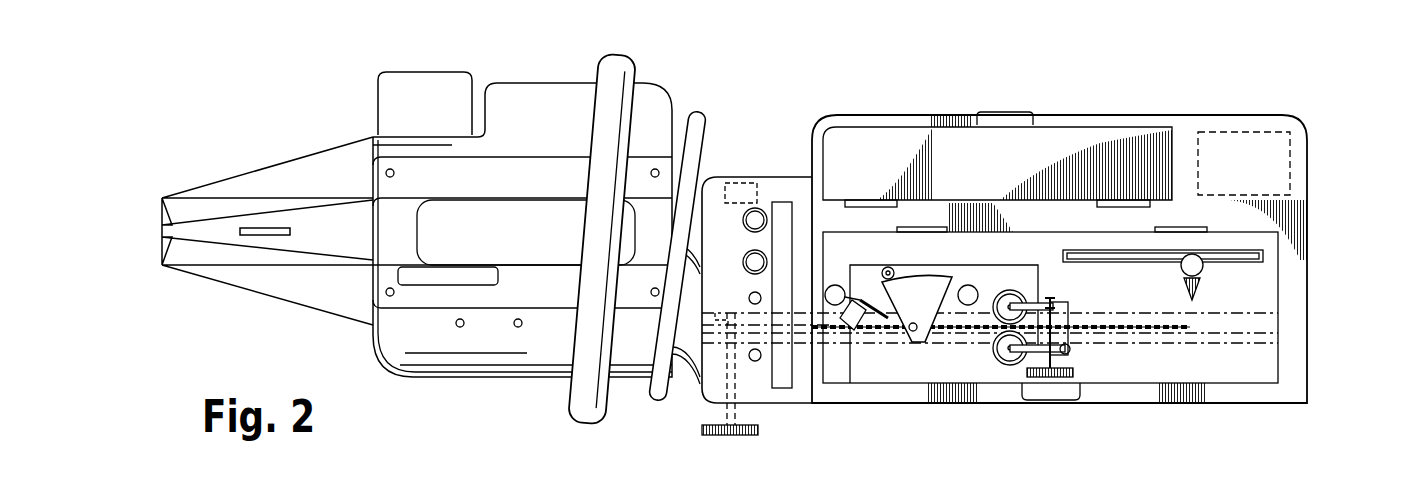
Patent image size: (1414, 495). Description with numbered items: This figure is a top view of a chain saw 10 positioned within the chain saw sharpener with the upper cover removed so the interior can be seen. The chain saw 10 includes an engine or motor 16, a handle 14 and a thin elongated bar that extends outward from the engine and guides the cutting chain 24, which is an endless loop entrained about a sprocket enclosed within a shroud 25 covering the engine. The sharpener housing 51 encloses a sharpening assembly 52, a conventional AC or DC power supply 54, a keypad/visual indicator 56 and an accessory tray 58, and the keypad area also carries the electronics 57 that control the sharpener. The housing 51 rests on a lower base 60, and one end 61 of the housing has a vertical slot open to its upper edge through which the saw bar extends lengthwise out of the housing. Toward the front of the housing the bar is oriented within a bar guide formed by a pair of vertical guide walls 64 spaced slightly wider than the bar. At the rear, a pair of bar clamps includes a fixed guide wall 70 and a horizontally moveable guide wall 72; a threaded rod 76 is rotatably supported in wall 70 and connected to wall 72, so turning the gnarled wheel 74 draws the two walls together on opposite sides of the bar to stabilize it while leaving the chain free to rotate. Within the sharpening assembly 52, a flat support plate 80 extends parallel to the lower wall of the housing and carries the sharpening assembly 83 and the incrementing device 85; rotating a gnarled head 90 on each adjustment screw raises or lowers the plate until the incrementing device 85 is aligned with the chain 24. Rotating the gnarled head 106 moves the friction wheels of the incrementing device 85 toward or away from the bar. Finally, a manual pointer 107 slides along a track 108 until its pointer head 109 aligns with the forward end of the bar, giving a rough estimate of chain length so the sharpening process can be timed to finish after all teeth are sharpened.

The chain saw 10 is at (233, 108).
The handle 14 is at (627, 63).
The engine or motor 16 is at (470, 363).
The cutting chain 24 is at (952, 330).
The shroud 25 is at (403, 357).
The sharpener housing 51 is at (1297, 193).
The sharpening assembly 52 is at (970, 263).
The power supply 54 is at (1248, 147).
The keypad/visual indicator 56 is at (777, 187).
The electronics 57 is at (747, 192).
The accessory tray 58 is at (1123, 140).
The lower base 60 is at (1227, 395).
The end of the housing 61 is at (700, 187).
The vertical guide walls 64 is at (1277, 317).
The guide wall 70 is at (807, 318).
The guide wall 72 is at (800, 337).
The gnarled wheel 74 is at (728, 433).
The threaded rod 76 is at (735, 390).
The support plate 80 is at (865, 280).
The sharpening assembly 83 is at (915, 263).
The incrementing device 85 is at (1013, 275).
The gnarled head 90 is at (878, 310).
The gnarled head 106 is at (1080, 368).
The manual pointer 107 is at (1227, 225).
The track 108 is at (1268, 260).
The pointer head 109 is at (1195, 270).